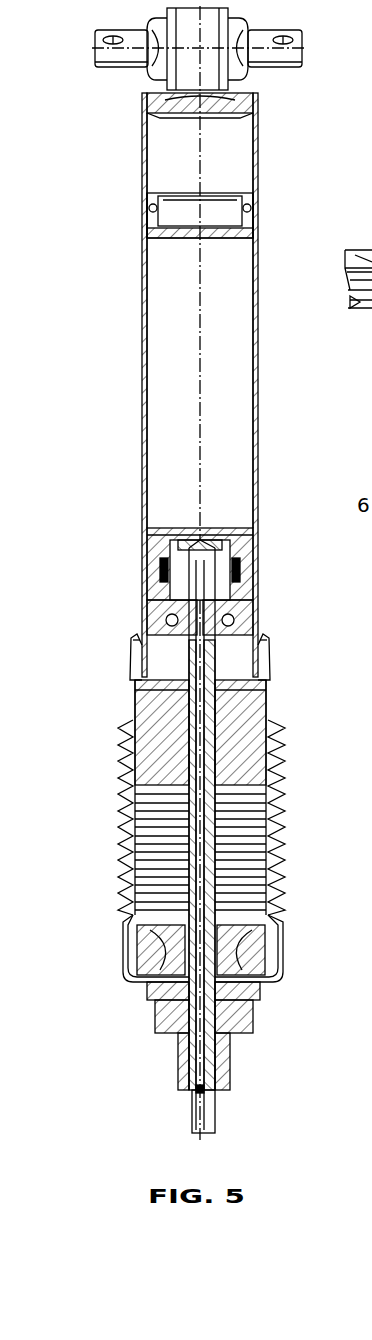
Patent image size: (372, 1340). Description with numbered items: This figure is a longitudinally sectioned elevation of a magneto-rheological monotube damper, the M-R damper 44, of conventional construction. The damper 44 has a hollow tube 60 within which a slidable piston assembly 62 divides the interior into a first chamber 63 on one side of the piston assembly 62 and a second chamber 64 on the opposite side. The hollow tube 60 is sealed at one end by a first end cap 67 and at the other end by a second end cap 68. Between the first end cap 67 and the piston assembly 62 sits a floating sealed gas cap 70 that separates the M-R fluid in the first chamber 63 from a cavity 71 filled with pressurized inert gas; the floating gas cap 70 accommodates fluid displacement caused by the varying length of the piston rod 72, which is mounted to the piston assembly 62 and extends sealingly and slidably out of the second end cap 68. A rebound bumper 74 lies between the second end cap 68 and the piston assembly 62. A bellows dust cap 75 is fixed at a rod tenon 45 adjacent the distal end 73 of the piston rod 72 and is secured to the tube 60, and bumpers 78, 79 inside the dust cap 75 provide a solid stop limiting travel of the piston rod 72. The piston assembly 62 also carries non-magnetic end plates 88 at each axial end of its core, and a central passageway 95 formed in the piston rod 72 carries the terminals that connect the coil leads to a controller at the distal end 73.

The M-R damper 44 is at (113, 336).
The rod tenon 45 is at (253, 1017).
The hollow tube 60 is at (142, 443).
The piston assembly 62 is at (258, 560).
The first chamber 63 is at (176, 427).
The second chamber 64 is at (245, 620).
The first end cap 67 is at (143, 104).
The second end cap 68 is at (265, 668).
The floating sealed gas cap 70 is at (152, 230).
The cavity 71 is at (176, 156).
The piston rod 72 is at (235, 712).
The distal end 73 is at (215, 1115).
The rebound bumper 74 is at (175, 623).
The bellows dust cap 75 is at (290, 858).
The bumper 78 is at (155, 725).
The bumper 79 is at (135, 953).
The non-magnetic end plate 88 is at (371, 405).
The central passageway 95 is at (360, 255).